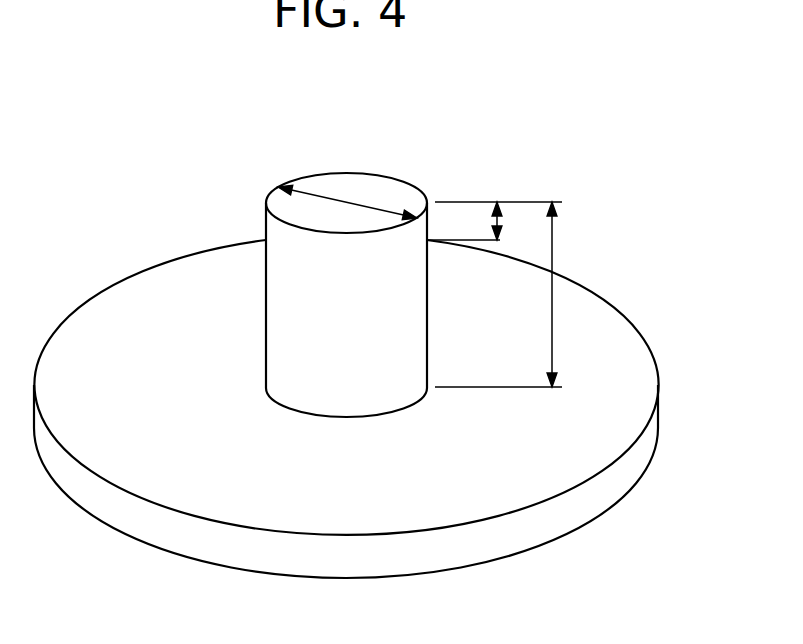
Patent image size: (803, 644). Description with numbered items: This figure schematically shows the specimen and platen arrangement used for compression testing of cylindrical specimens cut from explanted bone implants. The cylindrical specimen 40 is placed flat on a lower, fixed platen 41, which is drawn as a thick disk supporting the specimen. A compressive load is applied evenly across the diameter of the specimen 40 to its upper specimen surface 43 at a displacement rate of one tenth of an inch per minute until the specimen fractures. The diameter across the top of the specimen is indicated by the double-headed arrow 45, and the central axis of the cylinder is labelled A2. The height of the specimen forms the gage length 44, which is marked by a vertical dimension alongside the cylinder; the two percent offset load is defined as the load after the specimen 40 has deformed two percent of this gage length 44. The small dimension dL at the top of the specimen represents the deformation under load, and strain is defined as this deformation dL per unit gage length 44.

The specimen 40 is at (300, 313).
The lower fixed platen 41 is at (664, 416).
The upper specimen surface 43 is at (308, 215).
The gage length 44 is at (552, 320).
The diameter of cylinder top 45 is at (280, 188).
The axis of cylinder A2 is at (346, 190).
The deformation dL is at (493, 220).